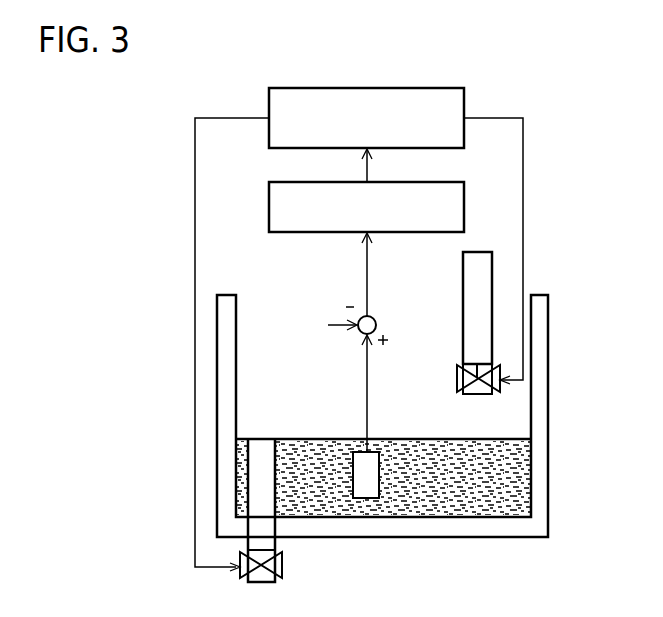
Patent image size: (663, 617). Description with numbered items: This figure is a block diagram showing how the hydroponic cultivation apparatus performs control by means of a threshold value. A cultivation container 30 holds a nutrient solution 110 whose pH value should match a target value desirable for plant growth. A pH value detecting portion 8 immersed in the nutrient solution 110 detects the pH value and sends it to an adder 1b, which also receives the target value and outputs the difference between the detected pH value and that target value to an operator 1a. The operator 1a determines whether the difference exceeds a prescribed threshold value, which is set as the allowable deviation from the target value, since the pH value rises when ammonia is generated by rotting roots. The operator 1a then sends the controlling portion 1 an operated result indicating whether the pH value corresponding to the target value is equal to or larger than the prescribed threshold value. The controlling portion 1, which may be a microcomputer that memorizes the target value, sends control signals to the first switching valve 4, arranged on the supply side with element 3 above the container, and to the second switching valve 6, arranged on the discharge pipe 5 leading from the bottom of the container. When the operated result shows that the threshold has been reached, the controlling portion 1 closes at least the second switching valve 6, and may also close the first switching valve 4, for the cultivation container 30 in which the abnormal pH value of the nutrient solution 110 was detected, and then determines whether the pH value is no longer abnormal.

The controlling portion 1 is at (420, 88).
The operator 1a is at (269, 205).
The adder 1b is at (377, 322).
The supply portion 3 is at (484, 252).
The first switching valve 4 is at (457, 378).
The discharge pipe 5 is at (262, 439).
The second switching valve 6 is at (283, 568).
The pH value detecting portion 8 is at (356, 452).
The cultivation container 30 is at (548, 415).
The nutrient solution 110 is at (418, 440).